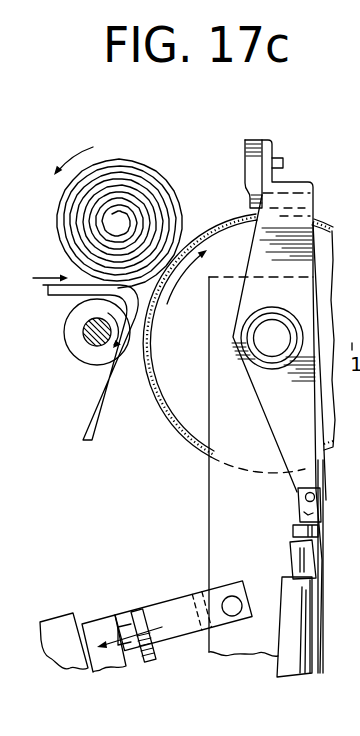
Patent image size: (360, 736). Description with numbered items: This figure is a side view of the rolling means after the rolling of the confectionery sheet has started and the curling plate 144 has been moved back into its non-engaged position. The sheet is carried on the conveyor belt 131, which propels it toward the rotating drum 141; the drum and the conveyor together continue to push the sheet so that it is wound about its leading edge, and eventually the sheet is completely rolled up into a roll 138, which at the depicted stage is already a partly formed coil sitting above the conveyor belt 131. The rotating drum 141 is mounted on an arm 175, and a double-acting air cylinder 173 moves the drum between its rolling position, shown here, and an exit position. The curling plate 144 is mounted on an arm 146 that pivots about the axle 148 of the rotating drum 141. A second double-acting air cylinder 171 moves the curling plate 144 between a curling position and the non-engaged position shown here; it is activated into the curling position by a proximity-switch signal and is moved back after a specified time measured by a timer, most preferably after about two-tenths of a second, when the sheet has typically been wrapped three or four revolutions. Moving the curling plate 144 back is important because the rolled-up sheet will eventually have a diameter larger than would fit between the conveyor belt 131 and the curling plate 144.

The roll 138 is at (118, 149).
The curling plate 144 is at (248, 145).
The arm 146 is at (268, 258).
The axle 148 is at (272, 338).
The conveyor belt 131 is at (57, 297).
The rotating drum 141 is at (167, 410).
The arm 175 is at (230, 510).
The double-acting air cylinder 173 is at (65, 645).
The double-acting air cylinder 171 is at (320, 640).